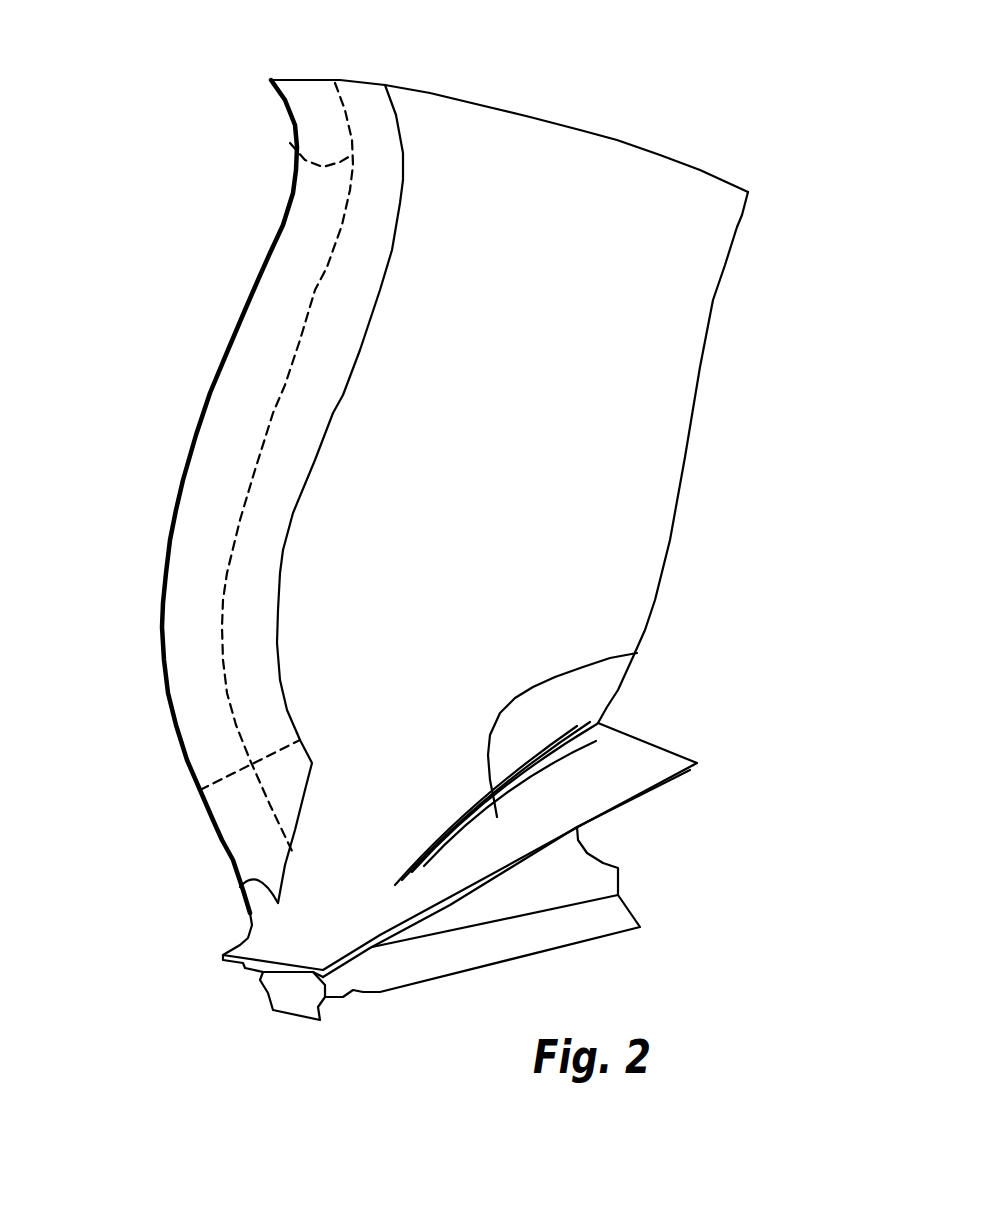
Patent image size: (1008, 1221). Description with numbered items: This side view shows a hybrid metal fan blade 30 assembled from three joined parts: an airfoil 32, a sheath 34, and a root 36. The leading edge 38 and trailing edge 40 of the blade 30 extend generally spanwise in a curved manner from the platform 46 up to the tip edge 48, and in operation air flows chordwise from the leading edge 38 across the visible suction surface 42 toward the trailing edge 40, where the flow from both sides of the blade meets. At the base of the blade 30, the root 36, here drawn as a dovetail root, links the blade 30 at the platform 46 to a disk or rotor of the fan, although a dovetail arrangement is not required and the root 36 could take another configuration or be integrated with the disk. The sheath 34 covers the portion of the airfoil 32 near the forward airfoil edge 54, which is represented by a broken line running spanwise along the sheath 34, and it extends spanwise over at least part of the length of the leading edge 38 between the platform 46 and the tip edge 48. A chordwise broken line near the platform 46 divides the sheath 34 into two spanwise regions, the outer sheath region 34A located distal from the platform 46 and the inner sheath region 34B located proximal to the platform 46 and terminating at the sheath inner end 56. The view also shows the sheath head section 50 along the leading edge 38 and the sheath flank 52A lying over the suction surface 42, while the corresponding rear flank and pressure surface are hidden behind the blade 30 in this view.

The blade 30 is at (790, 180).
The airfoil 32 is at (740, 365).
The sheath 34 is at (188, 393).
The outer sheath region 34A is at (138, 698).
The inner sheath region 34B is at (205, 845).
The root 36 is at (648, 905).
The leading edge 38 is at (167, 538).
The trailing edge 40 is at (685, 460).
The suction surface 42 is at (580, 567).
The platform 46 is at (637, 653).
The tip edge 48 is at (500, 107).
The sheath head section 50 is at (290, 270).
The sheath flank 52A is at (355, 98).
The forward airfoil edge 54 is at (280, 137).
The sheath inner end 56 is at (242, 887).